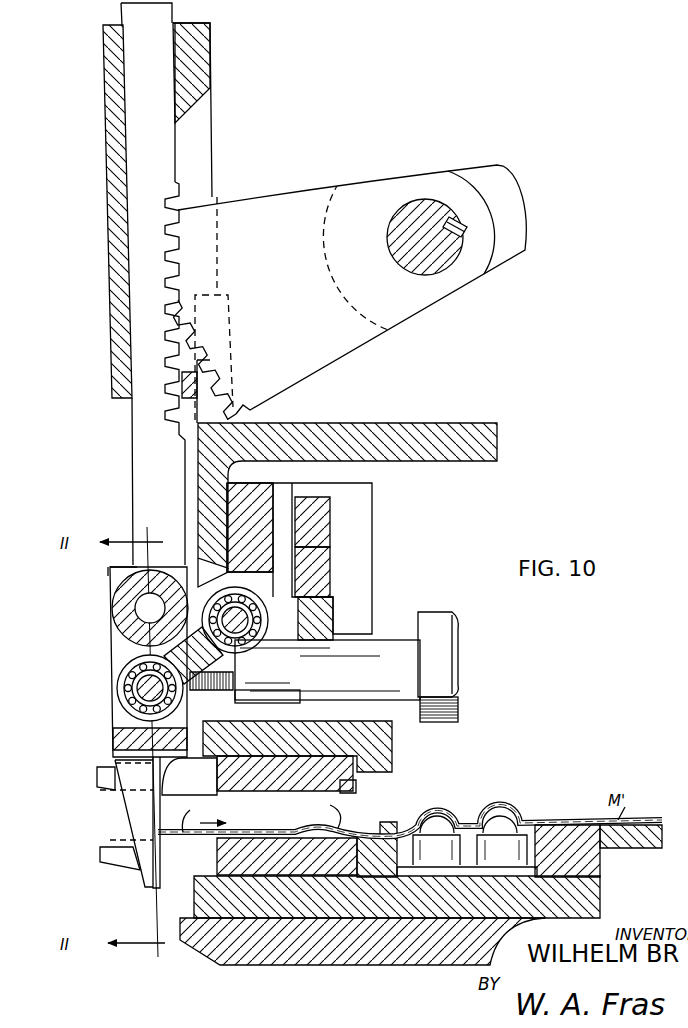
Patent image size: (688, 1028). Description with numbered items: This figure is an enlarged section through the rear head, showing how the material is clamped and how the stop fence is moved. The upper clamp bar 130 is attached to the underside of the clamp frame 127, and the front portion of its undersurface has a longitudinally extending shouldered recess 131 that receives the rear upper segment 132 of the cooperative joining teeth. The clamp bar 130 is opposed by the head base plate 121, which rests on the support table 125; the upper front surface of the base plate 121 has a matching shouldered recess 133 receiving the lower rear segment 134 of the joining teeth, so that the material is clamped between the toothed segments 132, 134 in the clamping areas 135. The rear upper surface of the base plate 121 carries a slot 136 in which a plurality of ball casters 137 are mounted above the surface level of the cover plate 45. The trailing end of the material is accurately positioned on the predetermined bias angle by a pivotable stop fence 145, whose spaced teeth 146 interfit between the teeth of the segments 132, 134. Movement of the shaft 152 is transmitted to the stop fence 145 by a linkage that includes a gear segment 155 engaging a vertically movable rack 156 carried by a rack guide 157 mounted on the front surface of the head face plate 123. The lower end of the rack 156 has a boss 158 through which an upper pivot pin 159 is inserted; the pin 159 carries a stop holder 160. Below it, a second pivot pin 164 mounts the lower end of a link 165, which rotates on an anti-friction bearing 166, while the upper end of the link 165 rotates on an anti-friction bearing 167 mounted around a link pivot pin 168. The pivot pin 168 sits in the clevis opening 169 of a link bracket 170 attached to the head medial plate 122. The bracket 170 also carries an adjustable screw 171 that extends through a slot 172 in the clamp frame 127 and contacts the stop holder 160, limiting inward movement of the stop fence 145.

The rack 156 is at (137, 13).
The rack guide 157 is at (108, 141).
The gear segment 155 is at (305, 200).
The shaft 152 is at (418, 215).
The face plate 123 is at (232, 307).
The medial plate 122 is at (470, 423).
The clamp frame 127 is at (328, 517).
The link bracket 170 is at (267, 543).
The clevis opening 169 is at (267, 575).
The slot 172 is at (333, 605).
The link pivot pin 168 is at (263, 612).
The anti-friction bearing 167 is at (263, 627).
The adjustable screw 171 is at (445, 673).
The boss 158 is at (130, 592).
The upper pivot pin 159 is at (135, 610).
The stop holder 160 is at (117, 648).
The second pivot pin 164 is at (120, 688).
The link 165 is at (122, 703).
The anti-friction bearing 166 is at (133, 716).
The upper clamp bar 130 is at (383, 747).
The shouldered recess 131 is at (355, 766).
The rear upper segment 132 is at (354, 785).
The shouldered recess 133 is at (350, 818).
The lower rear segment 134 is at (287, 842).
The clamping areas 135 is at (261, 814).
The ball casters 137 is at (437, 828).
The slot 136 is at (527, 826).
The cover plate 45 is at (643, 819).
The base plate 121 is at (278, 912).
The support table 125 is at (228, 958).
The stop fence 145 is at (127, 810).
The teeth 146 is at (145, 874).